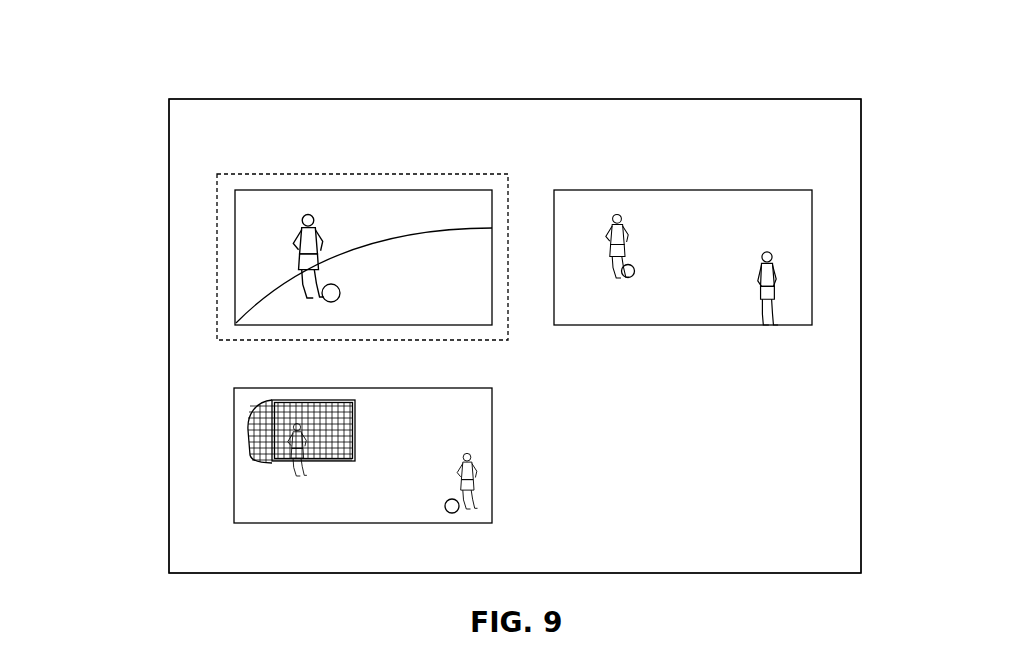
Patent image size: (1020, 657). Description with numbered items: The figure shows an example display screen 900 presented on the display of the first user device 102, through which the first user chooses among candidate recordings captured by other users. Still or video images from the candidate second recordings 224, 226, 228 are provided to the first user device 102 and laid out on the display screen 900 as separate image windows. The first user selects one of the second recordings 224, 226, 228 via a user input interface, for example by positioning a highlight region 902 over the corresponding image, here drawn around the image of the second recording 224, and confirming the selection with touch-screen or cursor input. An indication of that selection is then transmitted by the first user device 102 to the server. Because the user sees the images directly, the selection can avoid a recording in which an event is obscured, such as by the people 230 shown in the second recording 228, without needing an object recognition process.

The display screen 900 is at (136, 40).
The first user device 102 is at (870, 86).
The highlight region 902 is at (292, 174).
The second recording 224 is at (364, 190).
The second recording 226 is at (622, 190).
The second recording 228 is at (304, 388).
The people 230 is at (357, 432).